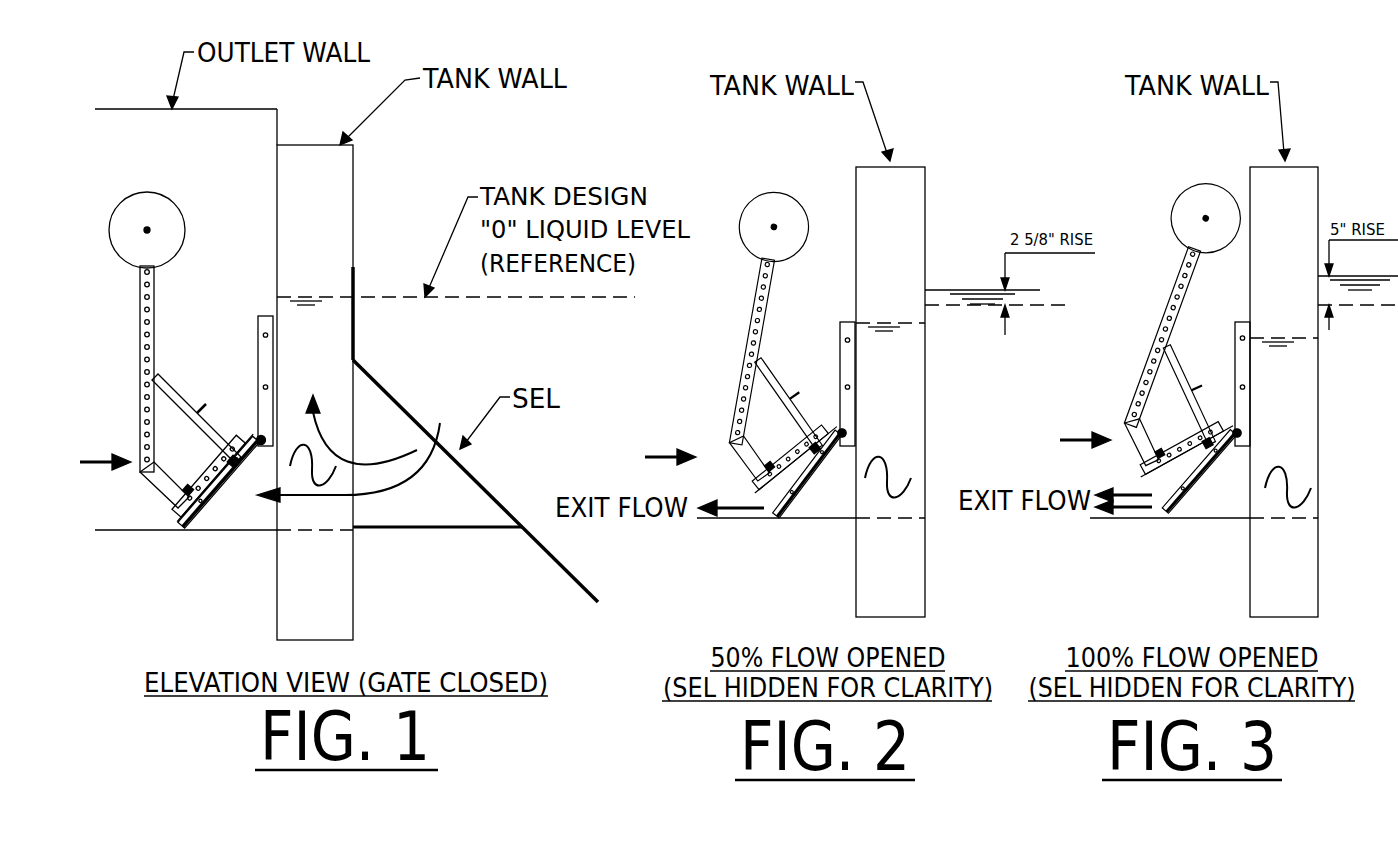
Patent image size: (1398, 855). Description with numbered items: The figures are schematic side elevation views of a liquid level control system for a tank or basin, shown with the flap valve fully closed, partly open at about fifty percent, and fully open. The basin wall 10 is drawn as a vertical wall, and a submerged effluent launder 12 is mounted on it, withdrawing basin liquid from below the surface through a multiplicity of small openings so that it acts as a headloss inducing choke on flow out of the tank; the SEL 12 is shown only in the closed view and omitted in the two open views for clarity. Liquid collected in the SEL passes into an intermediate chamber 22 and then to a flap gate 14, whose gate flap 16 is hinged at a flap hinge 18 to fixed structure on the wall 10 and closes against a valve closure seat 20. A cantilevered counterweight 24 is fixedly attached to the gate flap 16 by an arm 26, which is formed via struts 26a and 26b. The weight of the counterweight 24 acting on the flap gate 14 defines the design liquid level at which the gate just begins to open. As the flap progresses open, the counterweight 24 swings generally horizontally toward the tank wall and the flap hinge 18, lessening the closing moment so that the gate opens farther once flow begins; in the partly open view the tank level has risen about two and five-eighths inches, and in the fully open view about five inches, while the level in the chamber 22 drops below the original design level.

In FIG. 1, the basin wall 10 is at (376, 370).
In FIG. 2, the basin wall 10 is at (949, 368).
In FIG. 3, the basin wall 10 is at (1318, 391).
In FIG. 1, the submerged effluent launder 12 is at (475, 463).
In FIG. 1, the flap gate 14 is at (89, 462).
In FIG. 2, the flap gate 14 is at (652, 462).
In FIG. 3, the flap gate 14 is at (1068, 444).
In FIG. 1, the gate flap 16 is at (184, 508).
In FIG. 2, the gate flap 16 is at (753, 444).
In FIG. 3, the gate flap 16 is at (1147, 437).
In FIG. 1, the flap hinge 18 is at (236, 381).
In FIG. 2, the flap hinge 18 is at (819, 384).
In FIG. 3, the flap hinge 18 is at (1212, 384).
In FIG. 1, the valve closure seat 20 is at (202, 520).
In FIG. 1, the intermediate chamber 22 is at (253, 547).
In FIG. 2, the intermediate chamber 22 is at (825, 526).
In FIG. 3, the intermediate chamber 22 is at (1226, 537).
In FIG. 1, the counterweight 24 is at (136, 211).
In FIG. 2, the counterweight 24 is at (762, 212).
In FIG. 3, the counterweight 24 is at (1196, 209).
In FIG. 1, the arm 26 is at (108, 369).
In FIG. 1, the strut 26a is at (204, 365).
In FIG. 1, the strut 26b is at (126, 496).